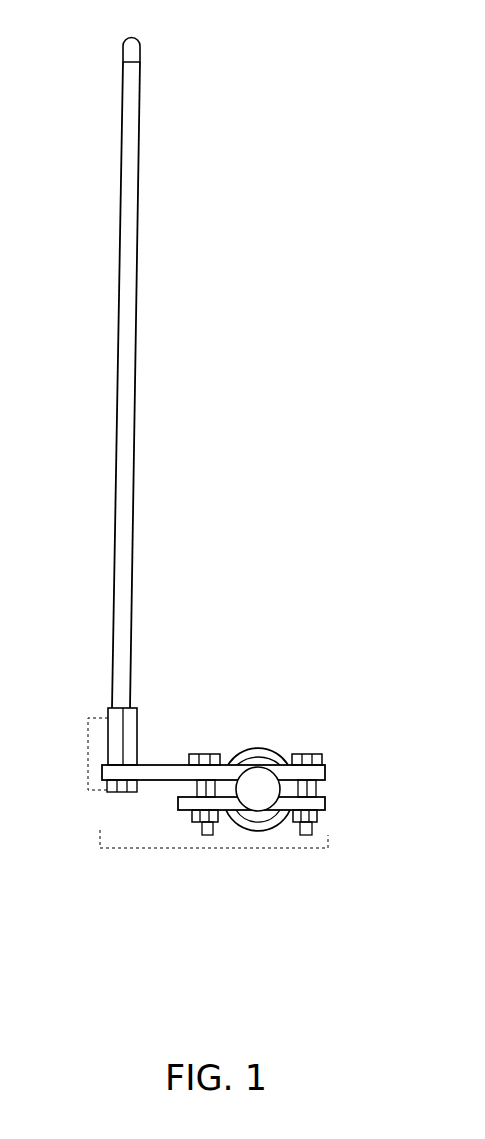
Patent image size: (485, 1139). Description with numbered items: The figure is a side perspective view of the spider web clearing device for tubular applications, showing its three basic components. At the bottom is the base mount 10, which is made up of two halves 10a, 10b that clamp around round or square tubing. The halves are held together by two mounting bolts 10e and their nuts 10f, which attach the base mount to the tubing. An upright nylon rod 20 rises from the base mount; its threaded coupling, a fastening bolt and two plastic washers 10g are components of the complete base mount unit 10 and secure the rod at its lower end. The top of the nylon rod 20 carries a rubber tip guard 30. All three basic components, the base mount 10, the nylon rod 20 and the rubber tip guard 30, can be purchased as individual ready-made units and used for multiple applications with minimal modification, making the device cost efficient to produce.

The base mount 10 is at (214, 857).
The first half of base mount 10a is at (158, 766).
The second half of base mount 10b is at (318, 787).
The mounting bolt 10e is at (210, 753).
The mounting nut 10f is at (318, 826).
The plastic washers 10g is at (85, 749).
The nylon rod 20 is at (133, 432).
The rubber tip guard 30 is at (141, 44).